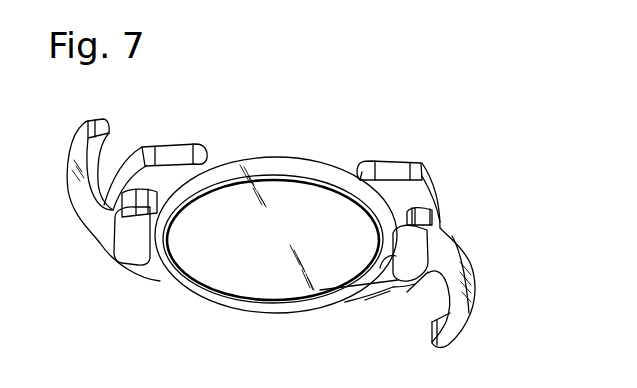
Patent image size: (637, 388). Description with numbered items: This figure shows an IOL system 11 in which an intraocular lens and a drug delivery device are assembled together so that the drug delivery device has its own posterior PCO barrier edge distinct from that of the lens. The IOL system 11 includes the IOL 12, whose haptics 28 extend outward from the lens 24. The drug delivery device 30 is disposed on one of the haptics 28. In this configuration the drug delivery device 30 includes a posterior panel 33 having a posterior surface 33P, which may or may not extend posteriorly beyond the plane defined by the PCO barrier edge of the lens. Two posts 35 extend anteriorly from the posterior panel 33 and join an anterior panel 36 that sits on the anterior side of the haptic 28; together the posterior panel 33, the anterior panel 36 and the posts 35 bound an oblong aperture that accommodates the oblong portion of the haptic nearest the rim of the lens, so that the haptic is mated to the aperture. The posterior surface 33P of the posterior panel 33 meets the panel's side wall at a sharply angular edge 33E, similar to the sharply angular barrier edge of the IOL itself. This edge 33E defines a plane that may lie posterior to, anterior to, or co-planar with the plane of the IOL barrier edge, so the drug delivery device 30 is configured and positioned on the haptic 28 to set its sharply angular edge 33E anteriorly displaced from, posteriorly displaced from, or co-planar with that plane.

The IOL system 11 is at (268, 140).
The IOL 12 is at (302, 156).
The lens 24 is at (216, 263).
The haptics 28 is at (470, 311).
The drug delivery device 30 is at (178, 138).
The posterior panel 33 is at (403, 263).
The posterior surface 33P is at (380, 295).
The sharply angular edge 33E is at (432, 274).
The posts 35 is at (118, 205).
The anterior panel 36 is at (424, 167).